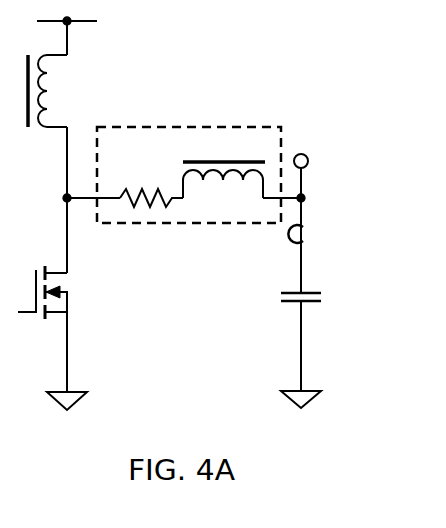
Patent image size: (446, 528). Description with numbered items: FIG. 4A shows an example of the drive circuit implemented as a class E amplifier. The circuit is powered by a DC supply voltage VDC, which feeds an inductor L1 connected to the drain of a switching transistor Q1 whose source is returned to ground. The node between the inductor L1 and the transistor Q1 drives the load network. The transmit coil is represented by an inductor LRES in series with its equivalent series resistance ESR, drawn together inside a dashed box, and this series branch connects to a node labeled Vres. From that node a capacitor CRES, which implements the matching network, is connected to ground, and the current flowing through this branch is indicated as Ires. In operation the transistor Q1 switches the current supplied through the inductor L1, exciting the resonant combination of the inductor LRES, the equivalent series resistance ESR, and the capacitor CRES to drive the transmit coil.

The DC supply voltage VDC is at (67, 29).
The inductor L1 is at (53, 91).
The equivalent series resistance ESR is at (151, 188).
The inductor LRES is at (224, 172).
The resonant voltage node Vres is at (321, 161).
The resonant current Ires is at (305, 234).
The capacitor CRES is at (320, 350).
The transistor Q1 is at (66, 338).